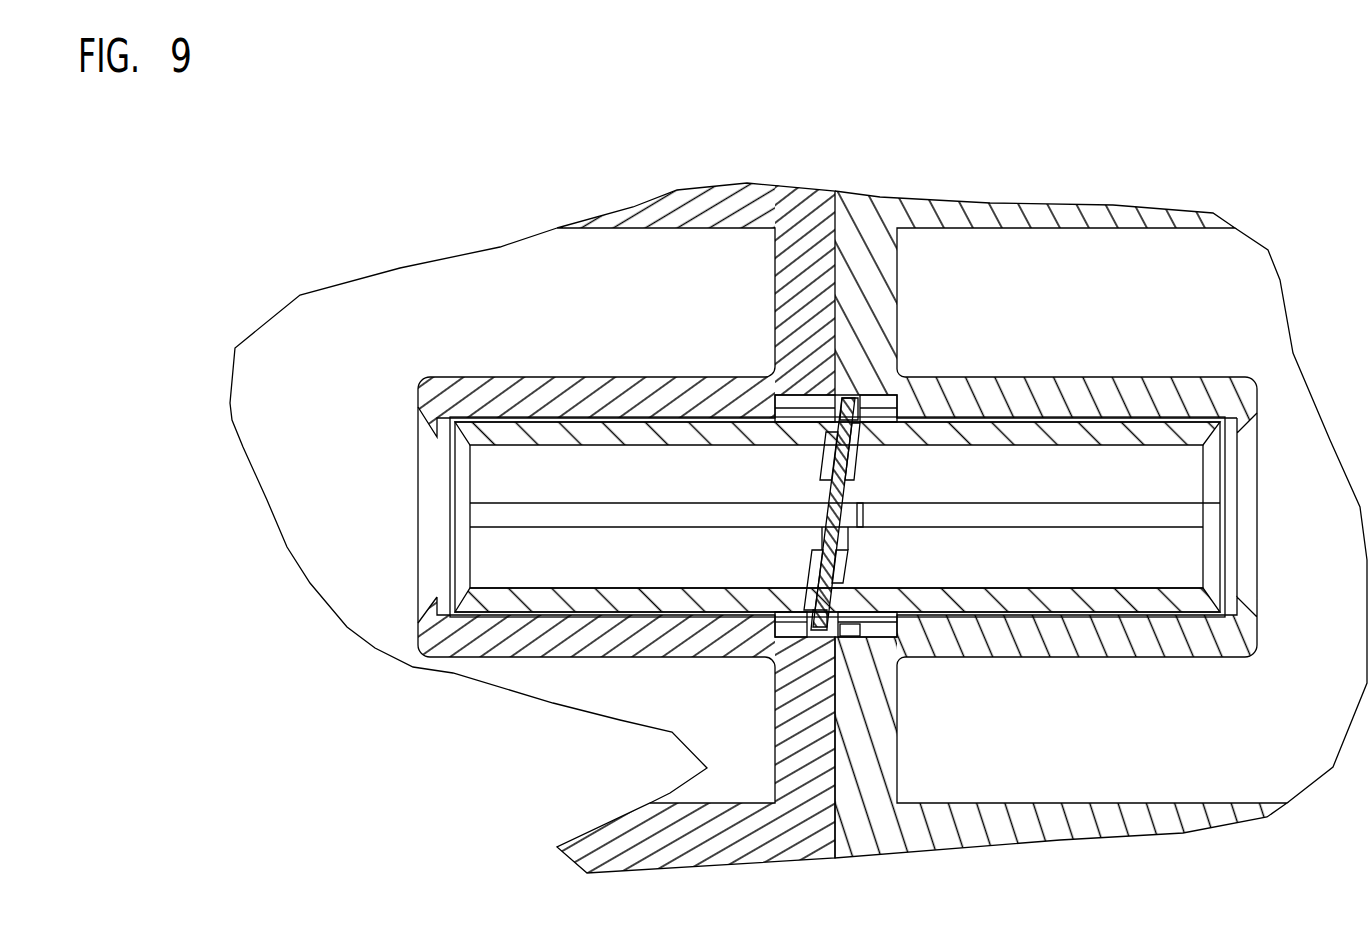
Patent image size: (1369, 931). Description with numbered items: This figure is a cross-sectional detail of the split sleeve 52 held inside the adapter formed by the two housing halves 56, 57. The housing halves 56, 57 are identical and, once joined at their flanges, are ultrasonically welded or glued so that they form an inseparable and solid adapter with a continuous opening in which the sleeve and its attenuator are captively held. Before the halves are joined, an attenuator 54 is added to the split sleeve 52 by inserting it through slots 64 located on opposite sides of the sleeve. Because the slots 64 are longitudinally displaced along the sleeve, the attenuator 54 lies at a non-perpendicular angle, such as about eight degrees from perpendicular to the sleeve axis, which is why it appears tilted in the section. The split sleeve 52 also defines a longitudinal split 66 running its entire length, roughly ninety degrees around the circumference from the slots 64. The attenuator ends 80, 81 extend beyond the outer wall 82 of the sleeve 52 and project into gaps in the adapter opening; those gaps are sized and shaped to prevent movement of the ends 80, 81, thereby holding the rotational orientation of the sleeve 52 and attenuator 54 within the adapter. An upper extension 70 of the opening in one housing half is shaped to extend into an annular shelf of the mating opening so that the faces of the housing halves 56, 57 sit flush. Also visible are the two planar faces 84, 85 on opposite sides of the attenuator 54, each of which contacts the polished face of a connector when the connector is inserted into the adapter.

The housing half 57 is at (635, 207).
The housing half 56 is at (910, 212).
The outer wall 82 is at (795, 423).
The attenuator end 81 is at (853, 407).
The slots 64 is at (857, 466).
The attenuator 54 is at (833, 503).
The face of attenuator 85 is at (843, 537).
The face of attenuator 84 is at (820, 538).
The split 66 is at (480, 517).
The split sleeve 52 is at (497, 552).
The attenuator end 80 is at (820, 613).
The upper extension of opening 70 is at (848, 613).